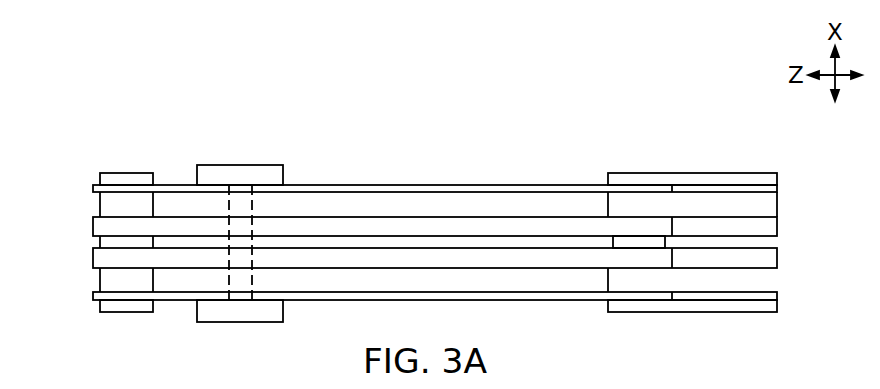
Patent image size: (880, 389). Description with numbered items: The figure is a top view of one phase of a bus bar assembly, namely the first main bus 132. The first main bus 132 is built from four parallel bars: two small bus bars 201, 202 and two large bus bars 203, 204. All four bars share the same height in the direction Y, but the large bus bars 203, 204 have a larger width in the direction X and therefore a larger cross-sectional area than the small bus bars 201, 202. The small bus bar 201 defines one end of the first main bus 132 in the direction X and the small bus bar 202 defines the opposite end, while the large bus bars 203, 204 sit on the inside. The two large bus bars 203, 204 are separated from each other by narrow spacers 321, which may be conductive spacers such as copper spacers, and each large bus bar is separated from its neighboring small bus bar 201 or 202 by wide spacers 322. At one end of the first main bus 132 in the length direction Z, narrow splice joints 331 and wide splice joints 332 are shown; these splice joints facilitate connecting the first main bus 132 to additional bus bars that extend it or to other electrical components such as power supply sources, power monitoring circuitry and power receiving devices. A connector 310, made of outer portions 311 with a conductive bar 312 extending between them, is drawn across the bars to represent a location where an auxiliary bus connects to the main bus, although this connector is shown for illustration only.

The first main bus 132 is at (724, 178).
The small bus bar 201 is at (523, 297).
The small bus bar 202 is at (363, 190).
The large bus bar 203 is at (466, 258).
The large bus bar 204 is at (415, 222).
The connector 310 is at (264, 169).
The outer portion 311 is at (241, 165).
The conductive bar 312 is at (243, 208).
The narrow spacer 321 is at (127, 173).
The wide spacer 322 is at (105, 203).
The narrow splice joint 331 is at (690, 173).
The wide splice joint 332 is at (763, 203).